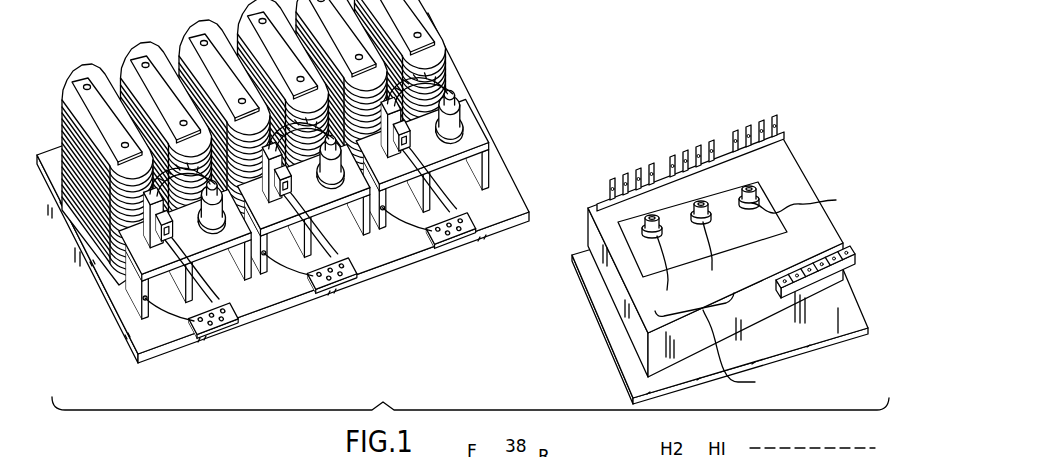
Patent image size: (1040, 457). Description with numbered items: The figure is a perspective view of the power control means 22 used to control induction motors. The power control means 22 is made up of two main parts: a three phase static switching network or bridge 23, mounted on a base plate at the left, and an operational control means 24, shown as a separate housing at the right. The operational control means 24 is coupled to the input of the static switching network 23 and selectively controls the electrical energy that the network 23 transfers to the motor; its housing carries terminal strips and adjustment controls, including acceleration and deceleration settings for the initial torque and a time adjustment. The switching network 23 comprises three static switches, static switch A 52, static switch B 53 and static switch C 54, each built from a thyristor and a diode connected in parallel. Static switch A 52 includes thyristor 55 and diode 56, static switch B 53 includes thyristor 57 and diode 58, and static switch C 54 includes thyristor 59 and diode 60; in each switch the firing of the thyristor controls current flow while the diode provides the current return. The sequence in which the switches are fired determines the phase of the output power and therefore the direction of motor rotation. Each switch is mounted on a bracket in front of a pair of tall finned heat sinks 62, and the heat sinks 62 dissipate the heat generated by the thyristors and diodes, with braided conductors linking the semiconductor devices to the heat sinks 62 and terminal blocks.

The power control means 22 is at (388, 193).
The three phase static switching network 23 is at (460, 90).
The operational control means 24 is at (830, 169).
The static switch A 52 is at (181, 274).
The static switch B 53 is at (337, 231).
The static switch C 54 is at (456, 179).
The thyristor 55 is at (152, 232).
The diode 56 is at (241, 250).
The thyristor 57 is at (253, 191).
The diode 58 is at (324, 214).
The thyristor 59 is at (438, 153).
The diode 60 is at (448, 124).
The heat sinks 62 is at (77, 66).